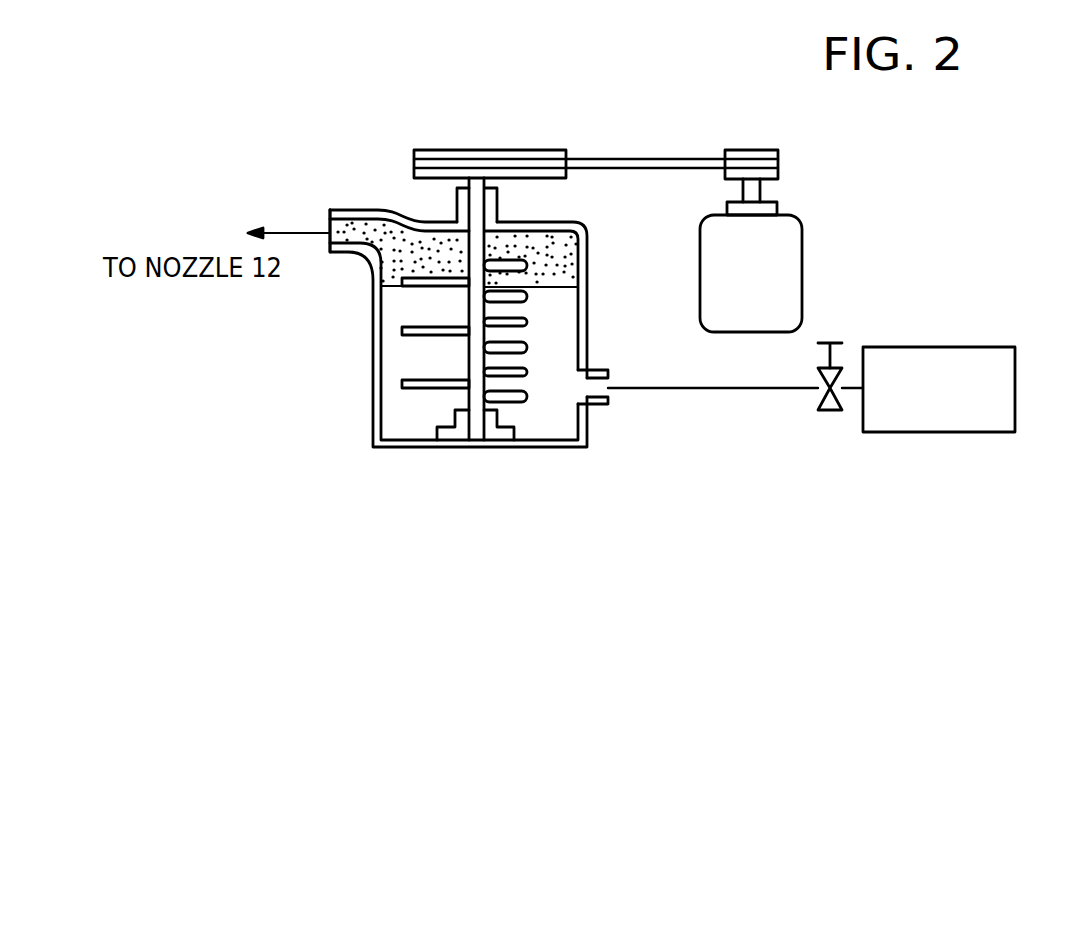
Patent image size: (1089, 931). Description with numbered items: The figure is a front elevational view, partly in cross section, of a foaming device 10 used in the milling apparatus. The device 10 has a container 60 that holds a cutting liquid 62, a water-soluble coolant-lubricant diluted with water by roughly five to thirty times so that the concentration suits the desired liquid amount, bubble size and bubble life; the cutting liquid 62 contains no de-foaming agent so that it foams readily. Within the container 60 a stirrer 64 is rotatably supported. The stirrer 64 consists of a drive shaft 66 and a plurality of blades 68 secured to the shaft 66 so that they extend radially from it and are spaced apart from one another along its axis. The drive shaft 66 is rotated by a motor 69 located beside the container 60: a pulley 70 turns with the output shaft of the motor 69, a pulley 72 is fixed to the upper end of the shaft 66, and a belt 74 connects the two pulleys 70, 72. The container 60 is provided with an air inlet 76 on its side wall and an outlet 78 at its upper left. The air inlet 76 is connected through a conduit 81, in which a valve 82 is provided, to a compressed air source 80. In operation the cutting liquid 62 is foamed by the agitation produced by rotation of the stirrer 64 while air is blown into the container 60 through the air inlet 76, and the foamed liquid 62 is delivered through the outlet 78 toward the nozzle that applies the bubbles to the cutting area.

The foaming device 10 is at (882, 248).
The container 60 is at (373, 333).
The cutting liquid 62 is at (405, 418).
The stirrer 64 is at (462, 270).
The drive shaft 66 is at (478, 208).
The blades 68 is at (406, 383).
The motor 69 is at (712, 271).
The pulley 70 is at (752, 150).
The pulley 72 is at (495, 150).
The belt 74 is at (637, 158).
The air inlet 76 is at (598, 406).
The outlet 78 is at (338, 253).
The compressed air source 80 is at (930, 432).
The conduit 81 is at (718, 392).
The valve 82 is at (830, 412).